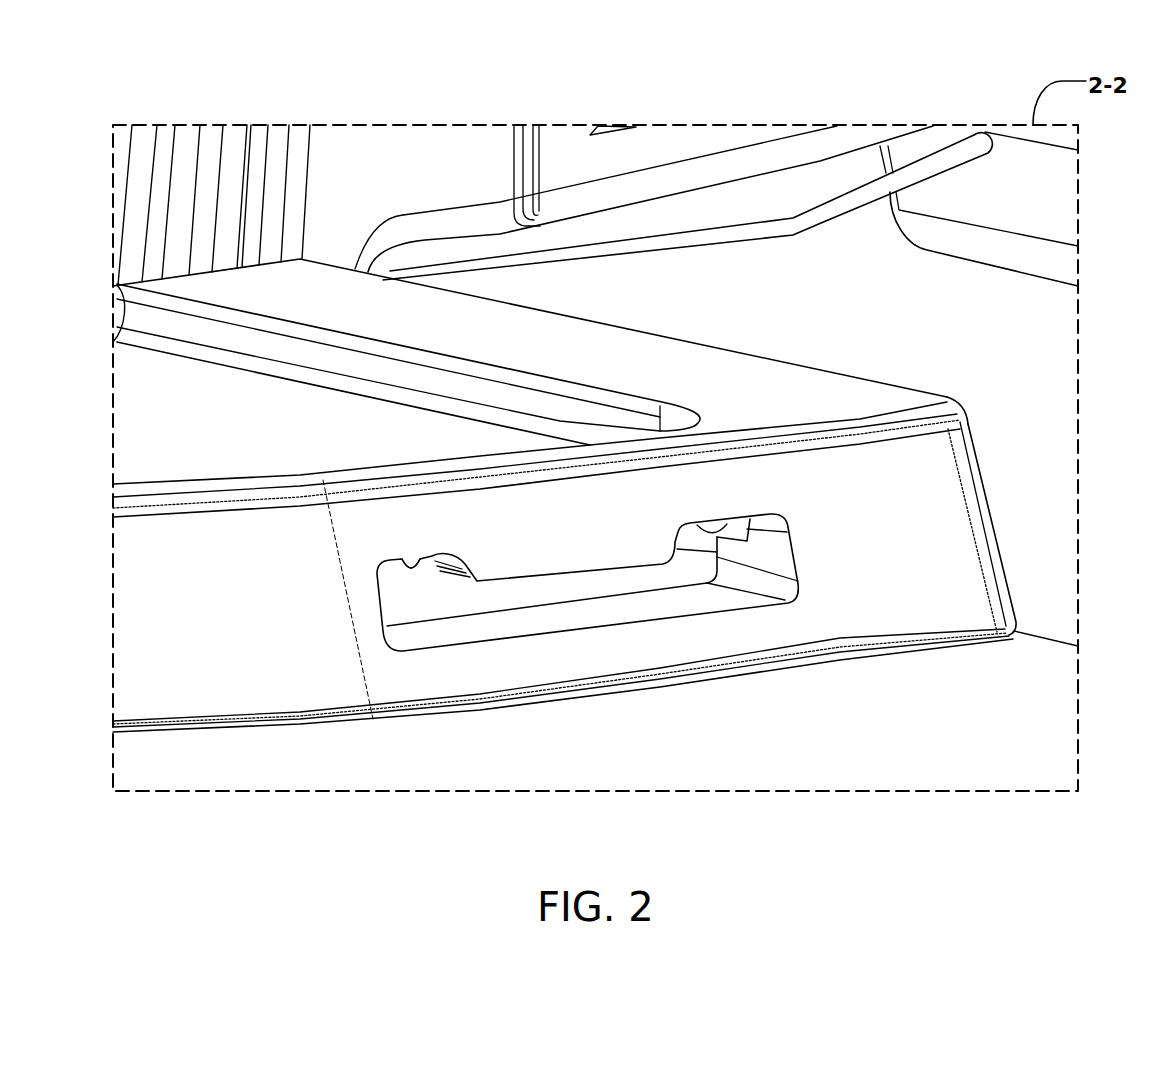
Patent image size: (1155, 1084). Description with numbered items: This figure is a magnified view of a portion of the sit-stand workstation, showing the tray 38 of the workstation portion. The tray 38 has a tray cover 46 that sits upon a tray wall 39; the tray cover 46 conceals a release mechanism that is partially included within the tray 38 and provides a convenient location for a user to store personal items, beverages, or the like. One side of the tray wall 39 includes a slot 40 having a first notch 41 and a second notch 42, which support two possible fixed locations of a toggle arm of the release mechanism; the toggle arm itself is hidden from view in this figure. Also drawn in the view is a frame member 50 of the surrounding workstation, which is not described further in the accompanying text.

The tray 38 is at (595, 500).
The tray wall 39 is at (950, 542).
The slot 40 is at (585, 603).
The first notch 41 is at (404, 566).
The second notch 42 is at (713, 532).
The tray cover 46 is at (796, 393).
The frame tube 50 is at (757, 236).